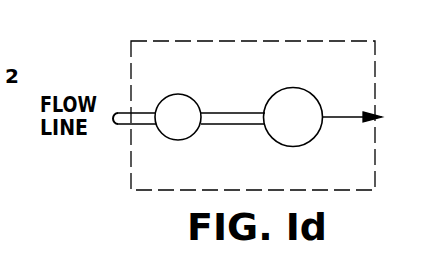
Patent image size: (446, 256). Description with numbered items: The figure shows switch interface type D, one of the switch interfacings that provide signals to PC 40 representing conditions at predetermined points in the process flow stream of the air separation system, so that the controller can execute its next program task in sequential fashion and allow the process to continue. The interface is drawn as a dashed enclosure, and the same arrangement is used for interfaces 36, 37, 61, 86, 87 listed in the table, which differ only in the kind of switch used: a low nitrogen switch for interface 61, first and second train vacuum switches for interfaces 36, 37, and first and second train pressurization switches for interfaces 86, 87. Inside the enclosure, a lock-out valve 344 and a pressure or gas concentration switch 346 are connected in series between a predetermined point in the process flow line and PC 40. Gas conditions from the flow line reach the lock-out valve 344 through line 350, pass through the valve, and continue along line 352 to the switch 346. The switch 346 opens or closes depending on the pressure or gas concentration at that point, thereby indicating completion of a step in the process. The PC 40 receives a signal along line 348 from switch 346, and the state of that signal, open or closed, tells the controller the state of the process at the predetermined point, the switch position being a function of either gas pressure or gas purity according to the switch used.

The switch interface 36 is at (148, 41).
The switch interface 37 is at (247, 97).
The switch interface 61 is at (247, 97).
The switch interface 86 is at (247, 97).
The switch interface 87 is at (247, 97).
The lock-out valve 344 is at (176, 94).
The pressure or gas concentration switch 346 is at (272, 91).
The line 348 is at (338, 116).
The line 350 is at (152, 125).
The line 352 is at (243, 112).
The PC 40 is at (406, 118).